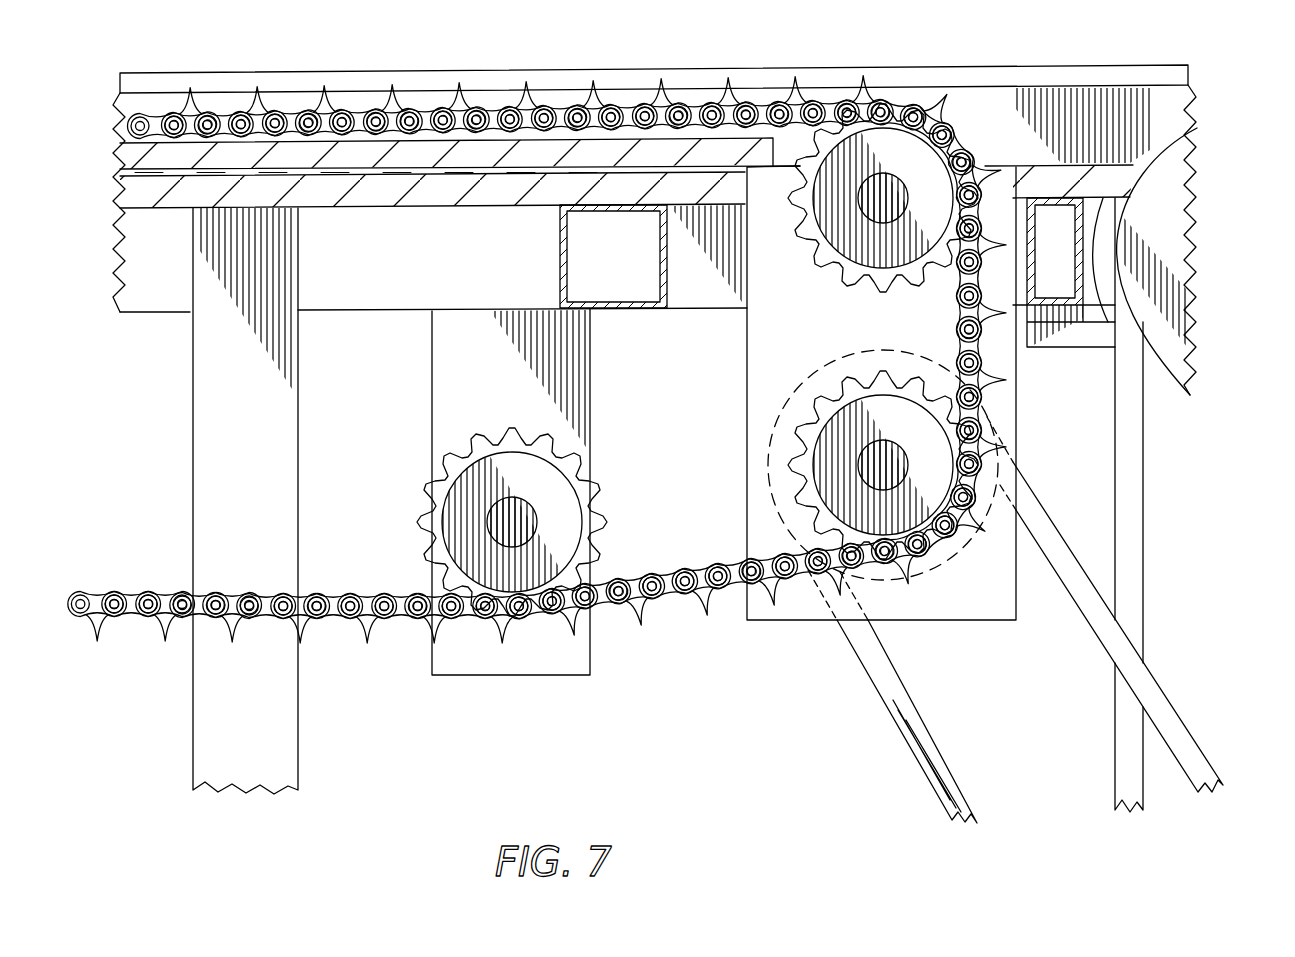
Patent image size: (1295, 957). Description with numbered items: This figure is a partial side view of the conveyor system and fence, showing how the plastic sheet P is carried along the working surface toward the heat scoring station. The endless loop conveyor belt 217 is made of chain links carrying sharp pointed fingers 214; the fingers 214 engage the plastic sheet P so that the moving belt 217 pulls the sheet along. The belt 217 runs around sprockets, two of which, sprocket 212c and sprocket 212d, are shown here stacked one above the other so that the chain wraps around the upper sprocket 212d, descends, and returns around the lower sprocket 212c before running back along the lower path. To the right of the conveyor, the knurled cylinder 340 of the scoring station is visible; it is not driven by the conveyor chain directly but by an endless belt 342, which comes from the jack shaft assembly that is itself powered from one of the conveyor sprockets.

The product P is at (171, 73).
The sharp pointed fingers 214 is at (538, 342).
The endless loop conveyor belt 217 is at (478, 102).
The sprocket 212c is at (863, 382).
The sprocket 212d is at (857, 288).
The knurled cylinder 340 is at (1180, 277).
The endless belt 342 is at (1132, 568).